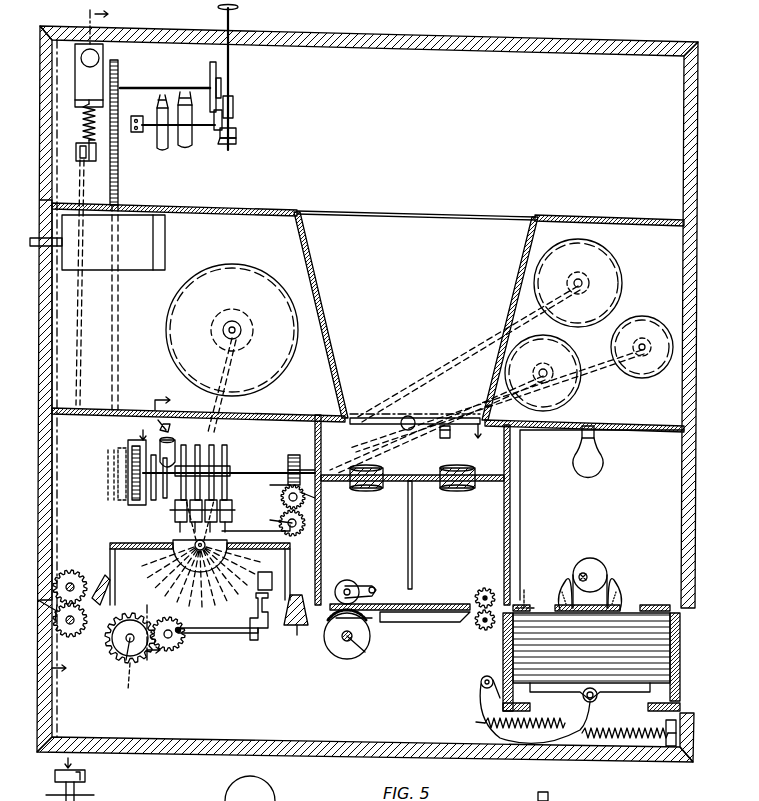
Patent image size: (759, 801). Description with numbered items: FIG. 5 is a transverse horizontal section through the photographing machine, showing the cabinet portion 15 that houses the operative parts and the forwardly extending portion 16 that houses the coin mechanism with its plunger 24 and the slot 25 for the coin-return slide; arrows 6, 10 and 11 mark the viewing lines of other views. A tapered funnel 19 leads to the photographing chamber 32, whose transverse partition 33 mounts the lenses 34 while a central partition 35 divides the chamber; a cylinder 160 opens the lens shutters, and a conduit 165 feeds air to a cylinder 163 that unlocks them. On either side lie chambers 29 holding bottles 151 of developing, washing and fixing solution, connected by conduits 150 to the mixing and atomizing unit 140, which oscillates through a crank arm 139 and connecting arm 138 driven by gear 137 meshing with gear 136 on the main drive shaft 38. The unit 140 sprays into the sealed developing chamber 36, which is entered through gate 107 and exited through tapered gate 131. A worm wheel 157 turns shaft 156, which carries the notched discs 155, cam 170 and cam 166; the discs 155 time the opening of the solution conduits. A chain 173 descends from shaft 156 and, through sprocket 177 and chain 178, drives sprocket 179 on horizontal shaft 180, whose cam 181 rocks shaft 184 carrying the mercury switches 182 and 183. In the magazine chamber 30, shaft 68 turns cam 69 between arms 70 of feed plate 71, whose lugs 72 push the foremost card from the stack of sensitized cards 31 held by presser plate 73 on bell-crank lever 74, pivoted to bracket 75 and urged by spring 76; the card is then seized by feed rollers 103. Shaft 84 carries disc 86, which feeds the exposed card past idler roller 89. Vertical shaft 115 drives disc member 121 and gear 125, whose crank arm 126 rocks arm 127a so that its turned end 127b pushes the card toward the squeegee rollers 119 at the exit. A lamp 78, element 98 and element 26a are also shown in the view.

The cabinet portion 16 is at (438, 70).
The cabinet portion 15 is at (44, 430).
The magazine chamber 30 is at (664, 514).
The chambers 29 is at (212, 218).
The slot 25 is at (82, 32).
The section line 6 is at (108, 14).
The plunger 24 is at (234, 24).
The sprocket 179 is at (118, 64).
The horizontal shaft 180 is at (124, 88).
The cam 181 is at (212, 72).
The mercury switch 182 is at (160, 152).
The mercury switch 183 is at (188, 152).
The shaft 184 is at (138, 134).
The chain 178 is at (112, 308).
The funnel 19 is at (450, 308).
The bottles 151 is at (284, 312).
The flexible conduits 150 is at (215, 392).
The cylinder 160 is at (402, 427).
The cylinder 163 is at (446, 438).
The section line 11 is at (318, 440).
The lamp 78 is at (596, 458).
The photographing chamber 32 is at (412, 510).
The transverse partition 33 is at (405, 476).
The partition 35 is at (408, 528).
The lenses 34 is at (376, 490).
The chain 173 is at (132, 506).
The sprocket 177 is at (116, 466).
The shaft 156 is at (244, 482).
The discs 155 is at (227, 462).
The cam 170 is at (176, 446).
The cam 166 is at (172, 512).
The worm wheel 157 is at (300, 452).
The main drive shaft 38 is at (306, 505).
The gear 136 is at (306, 486).
The gear 137 is at (306, 526).
The connecting arm 138 is at (280, 524).
The mixing and atomizing unit 140 is at (212, 556).
The crank arm 139 is at (201, 577).
The developing chamber 36 is at (130, 560).
The squeegee feed rollers 119 is at (78, 574).
The shaft 26a is at (48, 596).
The tapered gate 131 is at (90, 630).
The vertical shaft 115 is at (125, 652).
The disc member 121 is at (123, 683).
The gear 125 is at (176, 652).
The crank arm 126 is at (236, 640).
The laterally turned portion 127b is at (275, 622).
The arm 127a is at (262, 586).
The movable gate 107 is at (303, 636).
The shaft 84 is at (348, 660).
The disc member 86 is at (366, 660).
The idler roller 89 is at (362, 582).
The tray 98 is at (392, 626).
The feed rollers 103 is at (476, 594).
The feed plate 71 is at (526, 586).
The arms 70 is at (562, 596).
The cam 69 is at (598, 566).
The shaft 68 is at (582, 572).
The sensitized cards 31 is at (652, 620).
The lugs 72 is at (680, 636).
The presser plate 73 is at (650, 690).
The bracket 75 is at (494, 660).
The bell-crank lever 74 is at (528, 740).
The spring 76 is at (606, 742).
The conduit 165 is at (538, 796).
The section line 10 is at (169, 525).